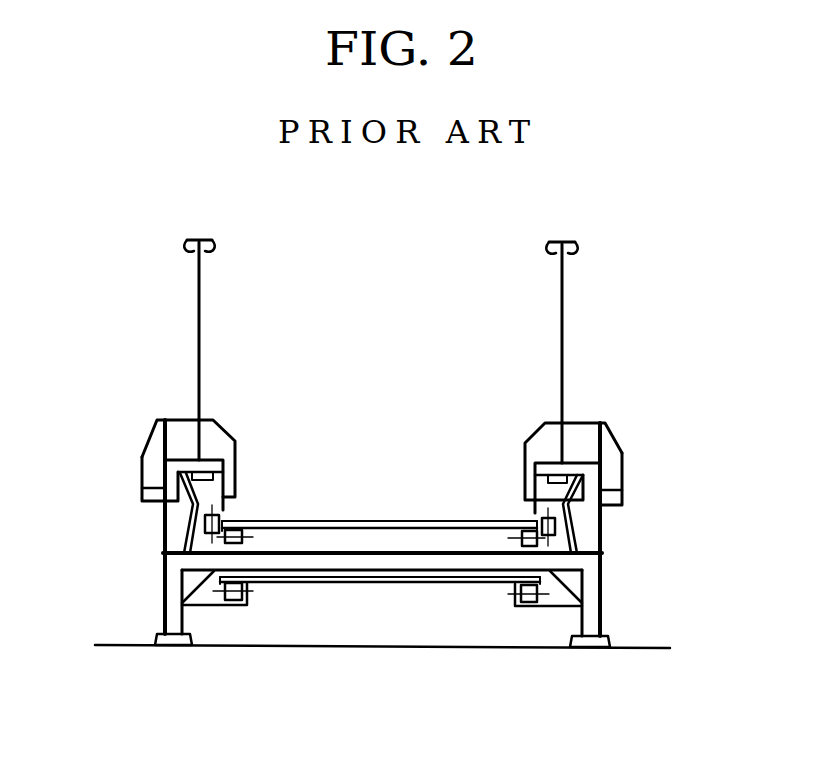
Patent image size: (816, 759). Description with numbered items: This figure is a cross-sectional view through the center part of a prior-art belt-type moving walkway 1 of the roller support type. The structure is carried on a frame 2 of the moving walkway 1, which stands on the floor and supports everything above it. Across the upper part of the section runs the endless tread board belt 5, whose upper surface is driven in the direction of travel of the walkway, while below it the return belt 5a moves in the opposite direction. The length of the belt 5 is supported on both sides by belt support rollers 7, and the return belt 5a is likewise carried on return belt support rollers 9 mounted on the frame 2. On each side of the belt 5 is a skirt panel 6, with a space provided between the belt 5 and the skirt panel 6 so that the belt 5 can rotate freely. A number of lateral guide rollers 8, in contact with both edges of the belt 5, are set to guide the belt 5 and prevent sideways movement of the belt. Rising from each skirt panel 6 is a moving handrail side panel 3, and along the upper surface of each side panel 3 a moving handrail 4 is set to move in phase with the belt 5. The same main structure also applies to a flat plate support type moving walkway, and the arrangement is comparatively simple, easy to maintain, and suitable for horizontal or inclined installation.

The moving walkway 1 is at (618, 253).
The frame 2 is at (158, 599).
The moving handrail side panel 3 is at (197, 305).
The moving handrail 4 is at (189, 238).
The belt 5 is at (366, 520).
The return belt 5a is at (380, 584).
The skirt panel 6 is at (238, 462).
The belt support roller 7 is at (525, 525).
The lateral guide roller 8 is at (206, 526).
The return belt support roller 9 is at (224, 605).